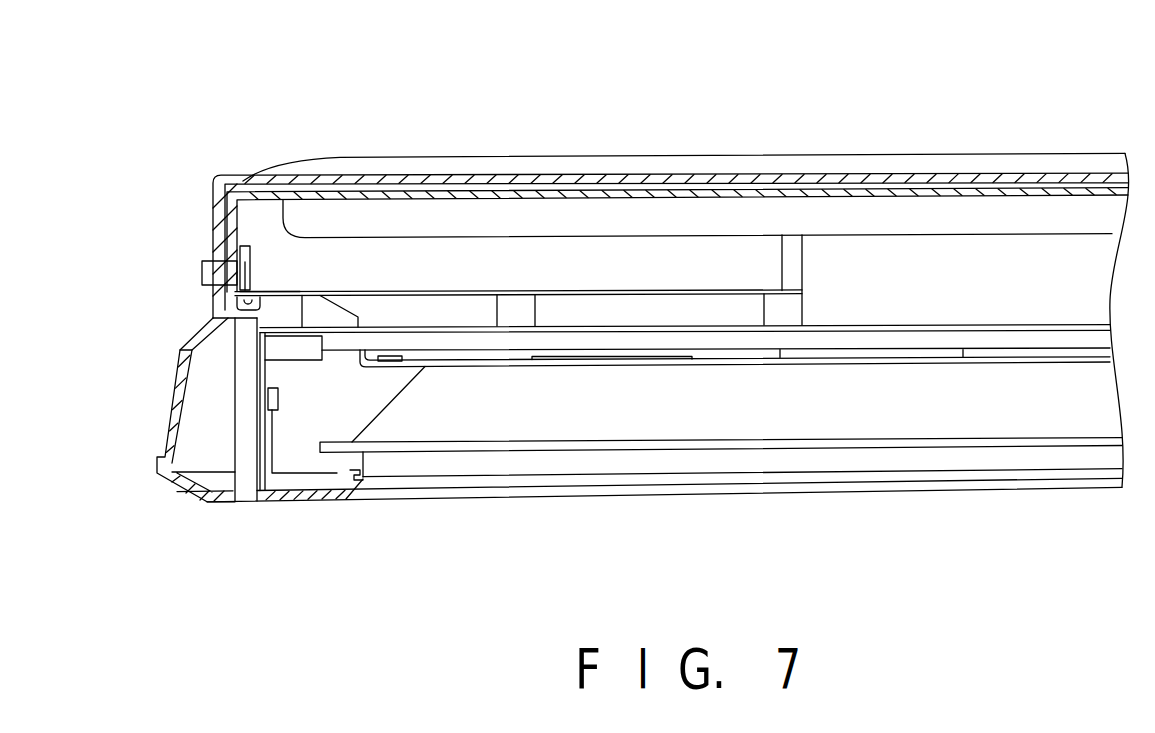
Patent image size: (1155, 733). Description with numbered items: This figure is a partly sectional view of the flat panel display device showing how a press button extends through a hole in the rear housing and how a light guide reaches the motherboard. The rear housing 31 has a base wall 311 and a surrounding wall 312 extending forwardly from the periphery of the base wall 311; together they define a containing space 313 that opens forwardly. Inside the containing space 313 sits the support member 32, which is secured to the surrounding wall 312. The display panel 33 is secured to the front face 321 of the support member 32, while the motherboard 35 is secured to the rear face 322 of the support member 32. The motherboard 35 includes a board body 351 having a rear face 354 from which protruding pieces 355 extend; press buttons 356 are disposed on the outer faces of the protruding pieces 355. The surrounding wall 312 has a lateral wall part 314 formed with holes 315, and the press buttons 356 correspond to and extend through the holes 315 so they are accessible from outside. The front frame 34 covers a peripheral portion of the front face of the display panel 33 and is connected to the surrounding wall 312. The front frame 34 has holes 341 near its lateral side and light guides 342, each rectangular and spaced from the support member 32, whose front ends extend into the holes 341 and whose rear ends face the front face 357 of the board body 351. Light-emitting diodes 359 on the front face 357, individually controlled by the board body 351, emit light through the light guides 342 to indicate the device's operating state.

The rear housing 31 is at (458, 150).
The base wall 311 is at (495, 182).
The surrounding wall 312 is at (158, 352).
The containing space 313 is at (733, 263).
The lateral wall part 314 is at (217, 207).
The holes 315 is at (203, 262).
The support member 32 is at (567, 342).
The front face 321 is at (610, 352).
The rear face 322 is at (513, 326).
The display panel 33 is at (608, 412).
The front frame 34 is at (208, 500).
The holes 341 is at (240, 501).
The light guides 342 is at (250, 445).
The motherboard 35 is at (392, 283).
The board body 351 is at (292, 293).
The rear face 354 is at (338, 288).
The protruding pieces 355 is at (247, 250).
The press buttons 356 is at (210, 276).
The front face 357 is at (262, 322).
The light-emitting diodes 359 is at (236, 303).